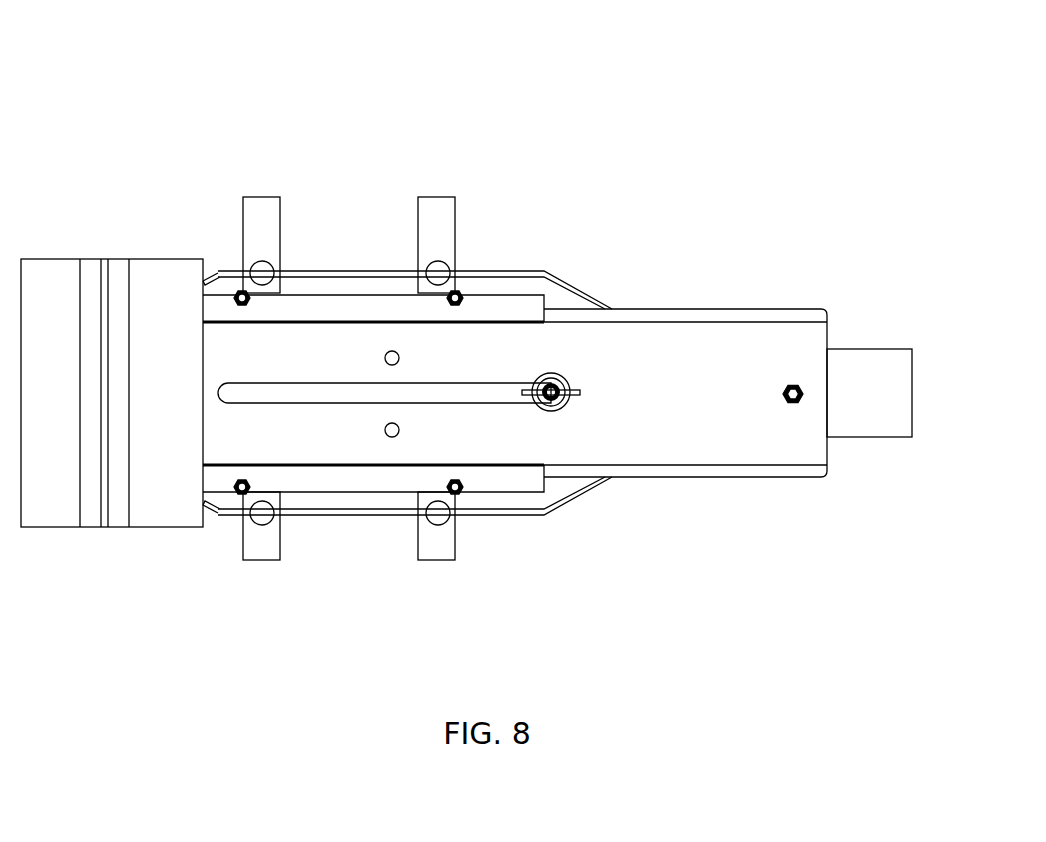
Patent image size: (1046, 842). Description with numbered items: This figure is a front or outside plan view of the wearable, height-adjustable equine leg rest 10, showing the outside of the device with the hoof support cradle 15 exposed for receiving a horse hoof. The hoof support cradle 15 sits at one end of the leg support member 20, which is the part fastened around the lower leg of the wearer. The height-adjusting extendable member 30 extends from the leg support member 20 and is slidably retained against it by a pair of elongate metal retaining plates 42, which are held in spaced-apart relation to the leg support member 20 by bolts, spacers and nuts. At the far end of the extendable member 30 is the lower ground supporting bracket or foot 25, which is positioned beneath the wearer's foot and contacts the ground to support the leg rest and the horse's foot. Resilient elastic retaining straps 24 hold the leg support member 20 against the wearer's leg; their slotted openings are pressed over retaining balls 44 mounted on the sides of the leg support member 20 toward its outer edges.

The equine leg rest 10 is at (153, 95).
The hoof support cradle 15 is at (67, 267).
The leg support member 20 is at (555, 483).
The retaining straps 24 is at (430, 207).
The ground supporting bracket or foot 25 is at (874, 427).
The height-adjusting extendable member 30 is at (690, 440).
The retaining plates 42 is at (497, 303).
The retaining balls 44 is at (438, 267).